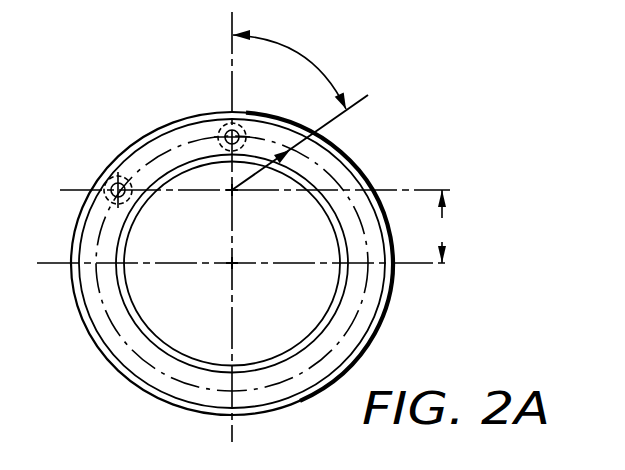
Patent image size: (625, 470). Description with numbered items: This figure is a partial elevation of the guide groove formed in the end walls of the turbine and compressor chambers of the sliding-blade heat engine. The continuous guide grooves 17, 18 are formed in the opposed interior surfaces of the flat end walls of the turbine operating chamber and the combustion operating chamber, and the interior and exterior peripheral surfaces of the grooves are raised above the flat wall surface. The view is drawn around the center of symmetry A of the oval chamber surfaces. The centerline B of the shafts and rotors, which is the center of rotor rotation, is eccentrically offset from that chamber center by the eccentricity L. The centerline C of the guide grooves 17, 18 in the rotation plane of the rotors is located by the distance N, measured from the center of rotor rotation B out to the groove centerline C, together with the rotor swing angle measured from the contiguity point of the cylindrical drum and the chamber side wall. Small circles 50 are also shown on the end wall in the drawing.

The guide groove 17 is at (251, 263).
The guide groove 18 is at (330, 158).
The mounting holes 50 is at (212, 122).
The center of symmetry A is at (231, 266).
The centerline of the shafts and rotors B is at (230, 191).
The centerline of the guide grooves C is at (362, 301).
The distance from the center of rotor rotation to the groove centerline N is at (248, 180).
The eccentricity L is at (442, 226).